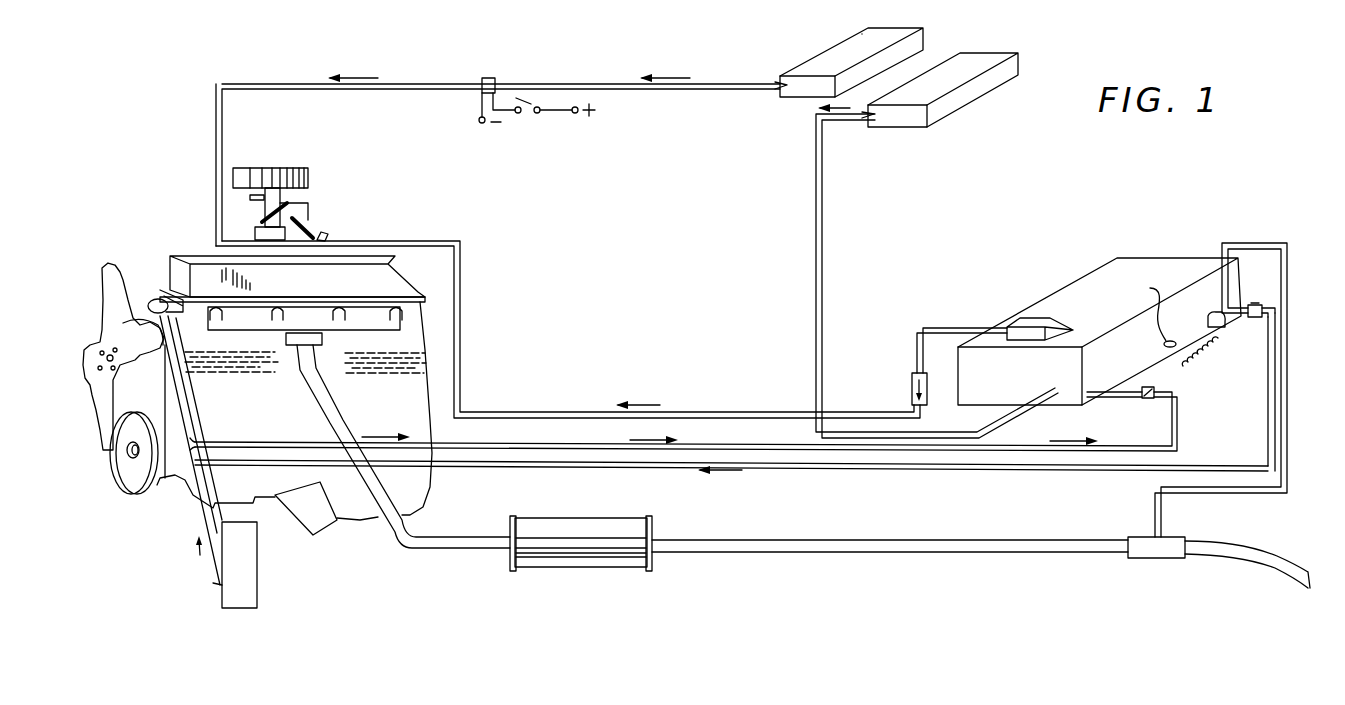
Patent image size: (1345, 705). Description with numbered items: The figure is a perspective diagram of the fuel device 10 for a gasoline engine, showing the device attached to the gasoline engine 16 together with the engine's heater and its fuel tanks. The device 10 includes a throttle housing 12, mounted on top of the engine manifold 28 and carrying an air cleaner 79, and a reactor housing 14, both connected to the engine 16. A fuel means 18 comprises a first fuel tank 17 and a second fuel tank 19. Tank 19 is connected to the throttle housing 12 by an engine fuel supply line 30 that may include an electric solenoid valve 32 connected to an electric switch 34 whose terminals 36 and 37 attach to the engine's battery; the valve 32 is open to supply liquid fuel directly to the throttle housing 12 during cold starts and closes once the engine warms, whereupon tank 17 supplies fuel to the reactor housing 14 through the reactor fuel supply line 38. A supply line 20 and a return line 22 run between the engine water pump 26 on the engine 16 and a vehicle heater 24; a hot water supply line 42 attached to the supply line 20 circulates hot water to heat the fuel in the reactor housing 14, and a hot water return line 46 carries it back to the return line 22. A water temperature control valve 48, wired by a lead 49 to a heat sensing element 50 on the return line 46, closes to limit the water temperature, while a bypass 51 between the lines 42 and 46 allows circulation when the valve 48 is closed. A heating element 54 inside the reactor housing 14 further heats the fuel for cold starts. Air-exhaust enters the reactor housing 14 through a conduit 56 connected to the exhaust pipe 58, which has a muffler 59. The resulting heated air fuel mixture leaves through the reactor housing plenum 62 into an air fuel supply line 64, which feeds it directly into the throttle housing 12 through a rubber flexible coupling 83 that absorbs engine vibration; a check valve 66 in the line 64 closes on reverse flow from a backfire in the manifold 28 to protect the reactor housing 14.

The fuel device 10 is at (714, 55).
The throttle housing 12 is at (303, 184).
The reactor housing 14 is at (1099, 303).
The gasoline engine 16 is at (303, 368).
The first fuel tank 17 is at (988, 64).
The fuel means 18 is at (952, 46).
The second fuel tank 19 is at (862, 36).
The supply line 20 is at (198, 428).
The return line 22 is at (202, 515).
The vehicle heater 24 is at (247, 583).
The engine water pump 26 is at (153, 295).
The engine manifold 28 is at (390, 277).
The engine fuel supply line 30 is at (546, 83).
The electric solenoid valve 32 is at (489, 77).
The electric switch 34 is at (526, 116).
The terminal 36 is at (577, 116).
The terminal 37 is at (483, 124).
The reactor fuel supply line 38 is at (826, 248).
The hot water supply line 42 is at (540, 443).
The hot water return line 46 is at (768, 468).
The water temperature control valve 48 is at (1156, 399).
The lead 49 is at (1182, 368).
The heat sensing element 50 is at (1256, 302).
The bypass 51 is at (1178, 460).
The heating element 54 is at (1150, 288).
The conduit 56 is at (1280, 347).
The exhaust pipe 58 is at (395, 547).
The muffler 59 is at (612, 550).
The reactor housing plenum 62 is at (1035, 324).
The air fuel supply line 64 is at (558, 412).
The check valve 66 is at (912, 380).
The air cleaner 79 is at (238, 173).
The rubber flexible coupling 83 is at (328, 237).